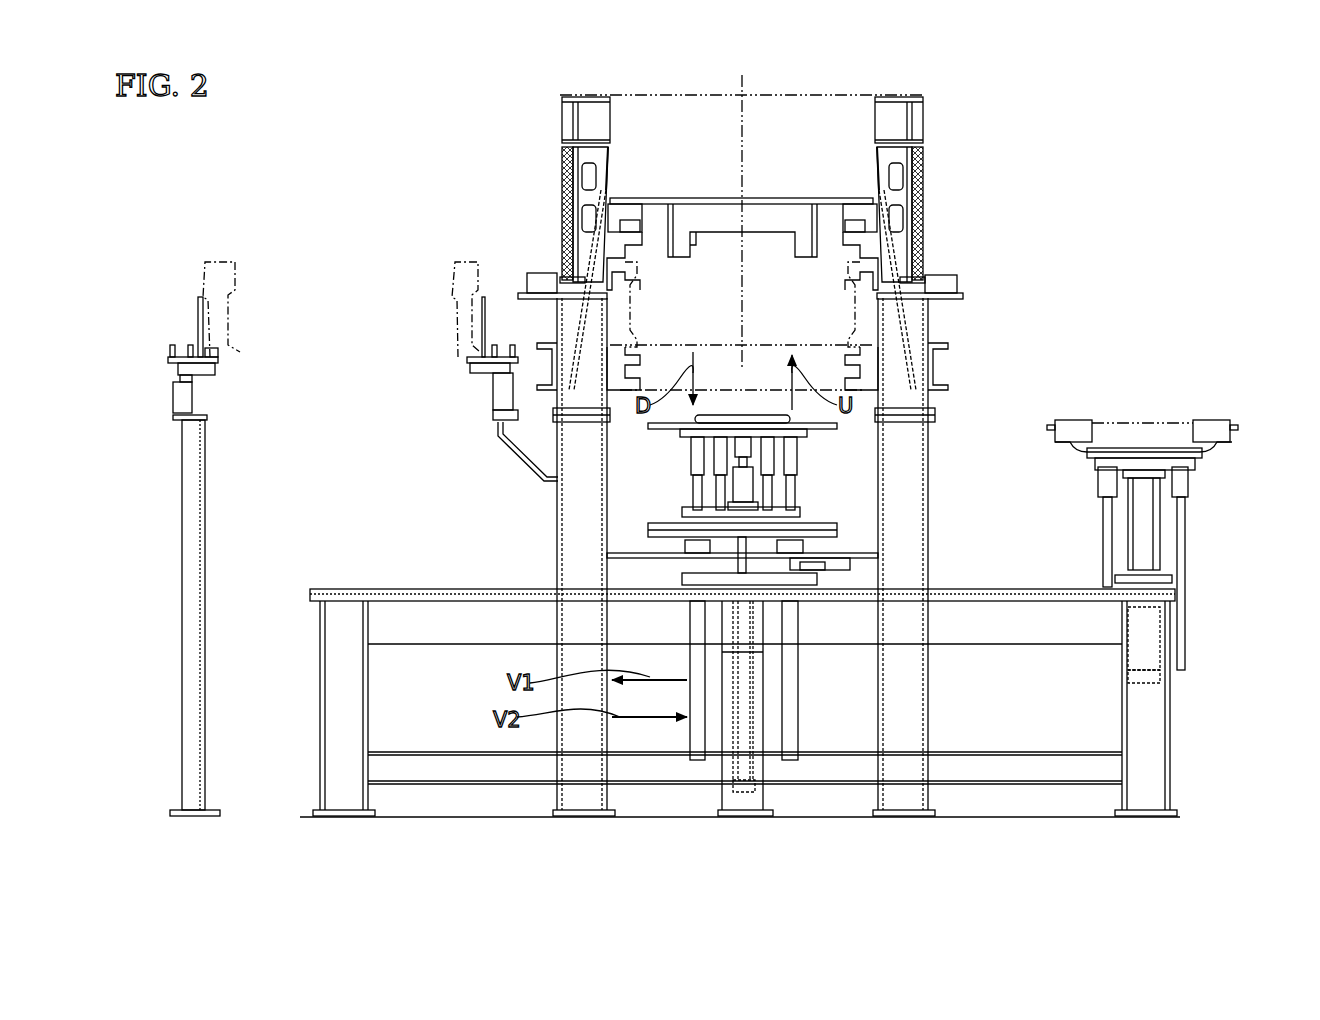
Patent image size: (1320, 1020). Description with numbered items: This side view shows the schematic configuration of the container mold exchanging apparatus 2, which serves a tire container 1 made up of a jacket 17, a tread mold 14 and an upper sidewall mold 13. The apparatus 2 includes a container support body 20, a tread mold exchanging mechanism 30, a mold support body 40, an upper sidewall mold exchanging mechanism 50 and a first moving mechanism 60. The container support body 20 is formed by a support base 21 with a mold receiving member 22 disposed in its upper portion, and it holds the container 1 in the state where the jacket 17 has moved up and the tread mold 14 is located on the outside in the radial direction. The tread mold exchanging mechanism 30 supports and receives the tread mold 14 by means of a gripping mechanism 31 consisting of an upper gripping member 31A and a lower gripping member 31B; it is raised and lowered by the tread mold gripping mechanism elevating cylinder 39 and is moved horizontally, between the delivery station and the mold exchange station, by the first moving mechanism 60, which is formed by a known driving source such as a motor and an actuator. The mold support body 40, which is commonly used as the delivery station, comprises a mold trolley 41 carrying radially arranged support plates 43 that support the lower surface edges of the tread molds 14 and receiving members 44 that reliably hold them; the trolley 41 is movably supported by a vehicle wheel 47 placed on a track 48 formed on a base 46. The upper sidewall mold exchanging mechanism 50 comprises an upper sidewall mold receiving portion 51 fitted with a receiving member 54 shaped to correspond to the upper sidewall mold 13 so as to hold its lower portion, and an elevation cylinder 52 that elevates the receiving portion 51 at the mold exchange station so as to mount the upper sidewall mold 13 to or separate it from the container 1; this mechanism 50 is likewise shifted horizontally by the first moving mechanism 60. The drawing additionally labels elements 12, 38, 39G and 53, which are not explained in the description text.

The container 1 is at (556, 166).
The container mold exchanging apparatus 2 is at (492, 123).
The slide 12 is at (833, 207).
The upper sidewall mold 13 is at (1218, 432).
The tread mold 14 is at (632, 303).
The jacket 17 is at (562, 250).
The container support body 20 is at (537, 263).
The support base 21 is at (558, 563).
The mold receiving member 22 is at (572, 290).
The tread mold exchanging mechanism 30 is at (860, 507).
The gripping mechanism 31 is at (485, 480).
The upper gripping member 31A is at (655, 430).
The lower gripping member 31B is at (655, 530).
The base 38 is at (650, 585).
The tread mold gripping mechanism elevating cylinder 39 is at (757, 767).
The guide 39G is at (692, 730).
The mold support body 40 is at (250, 298).
The mold trolley 41 is at (215, 363).
The support plates 43 is at (182, 353).
The receiving members 44 is at (218, 353).
The base 46 is at (205, 457).
The vehicle wheel 47 is at (193, 375).
The track 48 is at (187, 397).
The upper sidewall mold exchanging mechanism 50 is at (1050, 410).
The upper sidewall mold receiving portion 51 is at (1160, 453).
The elevation cylinder 52 is at (1148, 515).
The rod 53 is at (1182, 567).
The receiving member 54 is at (1077, 445).
The first moving mechanism 60 is at (1195, 597).